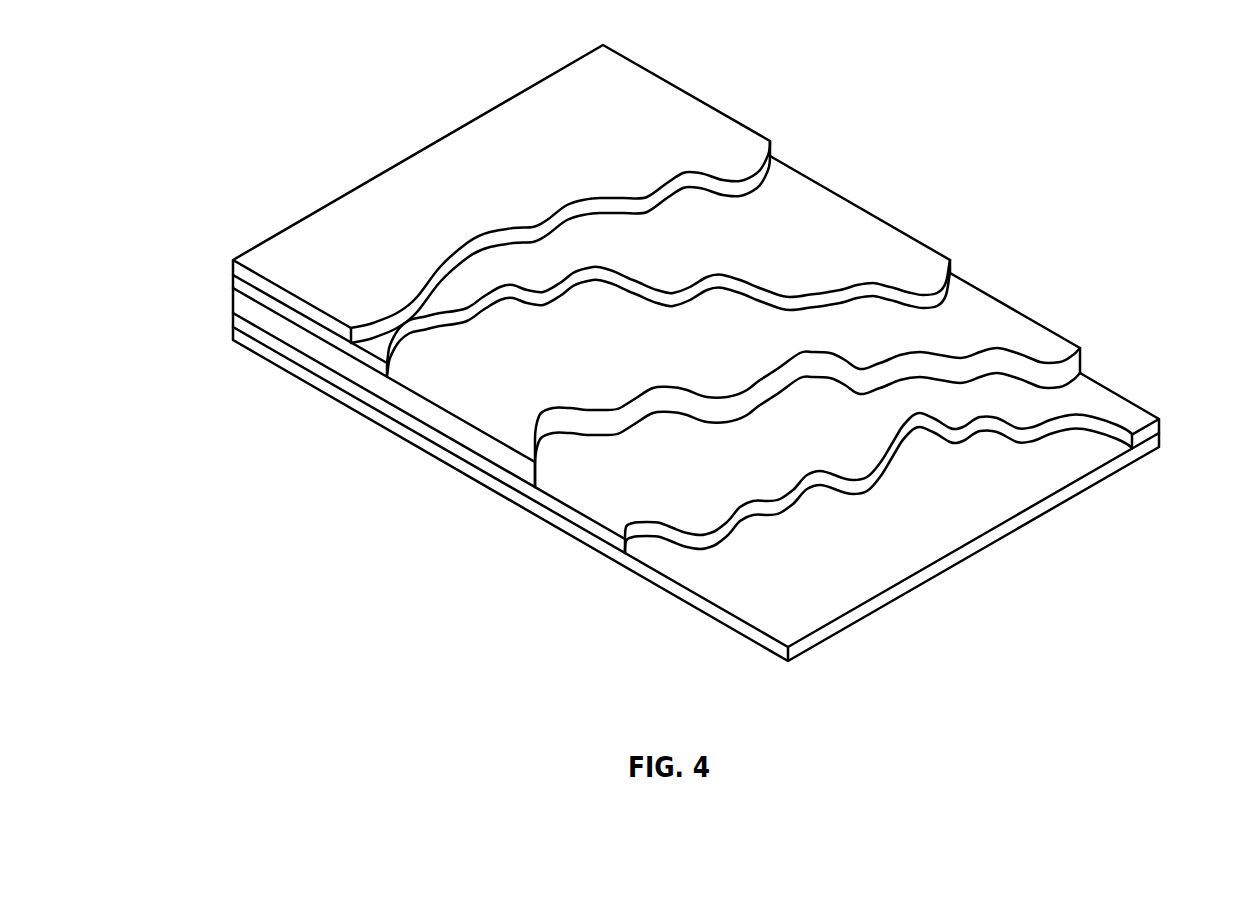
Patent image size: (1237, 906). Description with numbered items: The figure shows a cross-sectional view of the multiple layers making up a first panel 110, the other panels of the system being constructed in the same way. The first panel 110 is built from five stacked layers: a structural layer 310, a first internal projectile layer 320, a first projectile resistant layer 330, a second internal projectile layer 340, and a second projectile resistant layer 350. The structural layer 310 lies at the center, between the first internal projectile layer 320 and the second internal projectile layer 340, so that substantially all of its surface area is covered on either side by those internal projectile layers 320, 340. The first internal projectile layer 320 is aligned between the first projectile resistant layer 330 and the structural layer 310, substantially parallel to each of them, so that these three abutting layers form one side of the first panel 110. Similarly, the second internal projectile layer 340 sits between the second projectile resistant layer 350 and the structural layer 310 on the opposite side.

The first panel 110 is at (703, 357).
The structural layer 310 is at (500, 388).
The first internal projectile layer 320 is at (768, 233).
The first projectile resistant layer 330 is at (622, 119).
The second internal projectile layer 340 is at (622, 483).
The second projectile resistant layer 350 is at (860, 529).